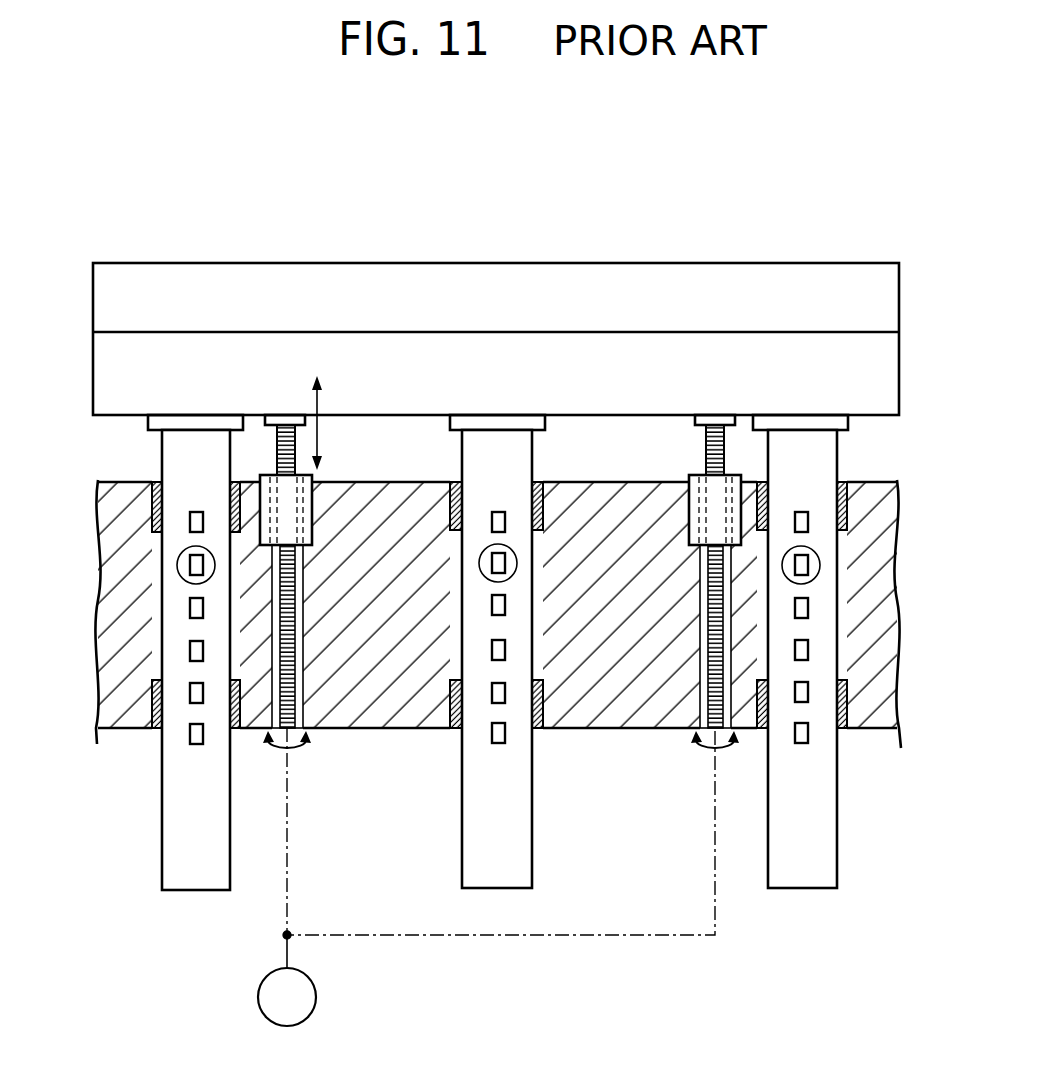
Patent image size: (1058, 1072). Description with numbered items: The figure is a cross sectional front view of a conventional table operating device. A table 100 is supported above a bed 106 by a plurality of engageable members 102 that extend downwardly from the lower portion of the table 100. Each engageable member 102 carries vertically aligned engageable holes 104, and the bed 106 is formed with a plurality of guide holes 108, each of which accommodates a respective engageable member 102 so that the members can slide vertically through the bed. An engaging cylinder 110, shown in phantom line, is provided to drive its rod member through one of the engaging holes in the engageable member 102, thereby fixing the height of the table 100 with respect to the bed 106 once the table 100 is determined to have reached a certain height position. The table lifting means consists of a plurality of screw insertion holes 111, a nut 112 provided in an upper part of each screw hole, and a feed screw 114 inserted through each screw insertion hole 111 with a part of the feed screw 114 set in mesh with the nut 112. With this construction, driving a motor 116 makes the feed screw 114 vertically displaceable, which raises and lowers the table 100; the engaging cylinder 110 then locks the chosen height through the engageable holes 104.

The table 100 is at (552, 278).
The engageable member 102 is at (207, 856).
The engageable holes 104 is at (485, 548).
The bed 106 is at (613, 507).
The guide holes 108 is at (233, 703).
The engaging cylinder 110 is at (177, 566).
The screw insertion holes 111 is at (308, 730).
The nut 112 is at (314, 502).
The feed screw 114 is at (275, 450).
The motor 116 is at (315, 1008).